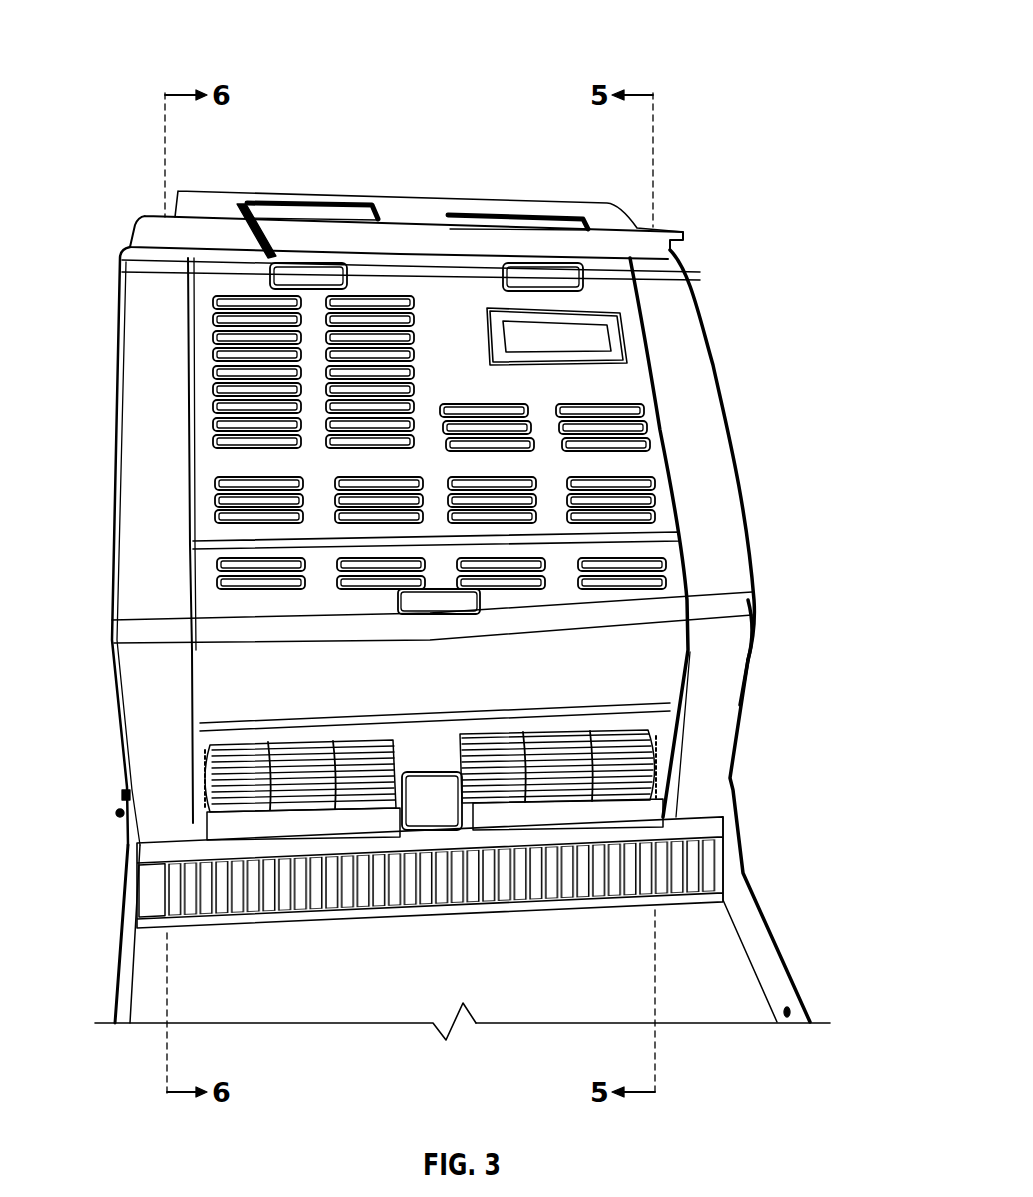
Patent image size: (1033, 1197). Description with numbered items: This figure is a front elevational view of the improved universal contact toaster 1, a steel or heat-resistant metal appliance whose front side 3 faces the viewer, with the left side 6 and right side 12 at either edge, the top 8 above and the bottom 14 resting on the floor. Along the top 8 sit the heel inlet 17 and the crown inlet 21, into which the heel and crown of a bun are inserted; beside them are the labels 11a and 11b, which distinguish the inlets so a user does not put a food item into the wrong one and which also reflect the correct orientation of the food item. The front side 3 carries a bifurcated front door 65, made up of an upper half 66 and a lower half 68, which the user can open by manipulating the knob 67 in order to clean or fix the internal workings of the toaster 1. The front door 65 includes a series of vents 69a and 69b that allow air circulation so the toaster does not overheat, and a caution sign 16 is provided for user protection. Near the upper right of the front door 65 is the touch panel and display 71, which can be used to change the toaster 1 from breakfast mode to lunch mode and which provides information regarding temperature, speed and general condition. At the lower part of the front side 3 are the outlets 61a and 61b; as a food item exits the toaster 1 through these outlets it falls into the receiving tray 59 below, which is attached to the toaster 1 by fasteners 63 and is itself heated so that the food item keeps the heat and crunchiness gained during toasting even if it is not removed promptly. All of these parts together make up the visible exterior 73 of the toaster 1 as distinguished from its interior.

The universal contact toaster 1 is at (152, 45).
The front side 3 is at (750, 717).
The left side 6 is at (710, 328).
The top 8 is at (395, 215).
The label 11a is at (577, 242).
The label 11b is at (273, 260).
The right side 12 is at (115, 470).
The bottom 14 is at (152, 1018).
The caution signs 16 is at (480, 603).
The heel inlet 17 is at (500, 224).
The crown inlet 21 is at (330, 213).
The receiving tray 59 is at (702, 1017).
The outlet 61a is at (267, 742).
The outlet 61b is at (510, 733).
The fasteners 63 is at (117, 817).
The front door 65 is at (677, 507).
The upper half 66 is at (660, 378).
The knob 67 is at (455, 540).
The lower half 68 is at (178, 573).
The vents 69a is at (653, 478).
The vents 69b is at (670, 580).
The touch panel and display 71 is at (625, 343).
The exterior 73 is at (752, 570).